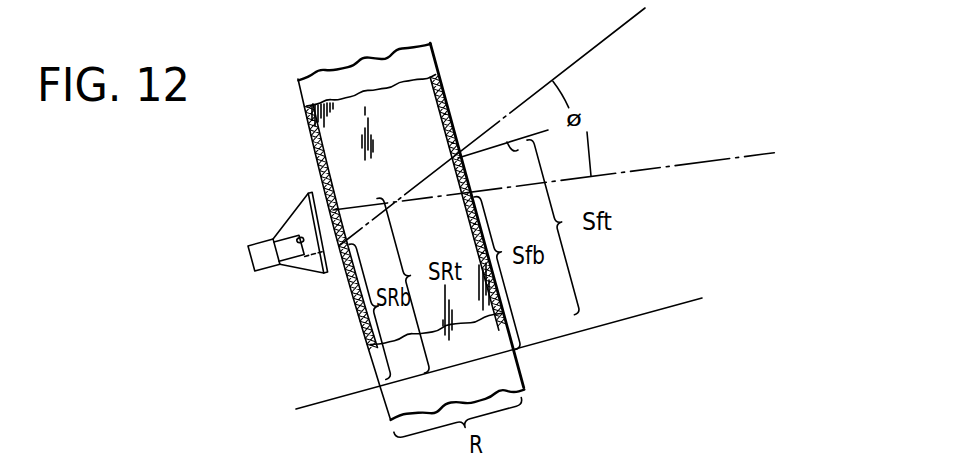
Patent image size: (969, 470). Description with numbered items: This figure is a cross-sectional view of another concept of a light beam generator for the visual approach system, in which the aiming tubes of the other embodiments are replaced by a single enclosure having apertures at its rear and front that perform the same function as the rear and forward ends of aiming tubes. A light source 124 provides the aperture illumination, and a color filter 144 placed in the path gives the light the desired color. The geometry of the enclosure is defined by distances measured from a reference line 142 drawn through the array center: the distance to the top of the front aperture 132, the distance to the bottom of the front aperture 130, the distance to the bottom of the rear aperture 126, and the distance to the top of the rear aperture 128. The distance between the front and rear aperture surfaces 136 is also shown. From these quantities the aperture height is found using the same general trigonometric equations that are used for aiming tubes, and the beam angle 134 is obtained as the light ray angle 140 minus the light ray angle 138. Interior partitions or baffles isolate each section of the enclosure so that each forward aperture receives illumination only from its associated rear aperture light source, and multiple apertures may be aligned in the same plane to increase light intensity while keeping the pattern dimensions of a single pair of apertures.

The light source 124 is at (286, 241).
The distance Srb to bottom of rear aperture 126 is at (375, 368).
The distance Srt to top of rear aperture 128 is at (406, 284).
The distance Sfb to bottom of front aperture 130 is at (500, 272).
The distance Sft to top of front aperture 132 is at (556, 226).
The beam angle 134 is at (589, 136).
The distance R between front and rear aperture surfaces 136 is at (523, 403).
The light ray angle 138 is at (694, 163).
The light ray angle 140 is at (600, 44).
The reference line 142 is at (328, 400).
The color filter 144 is at (340, 227).